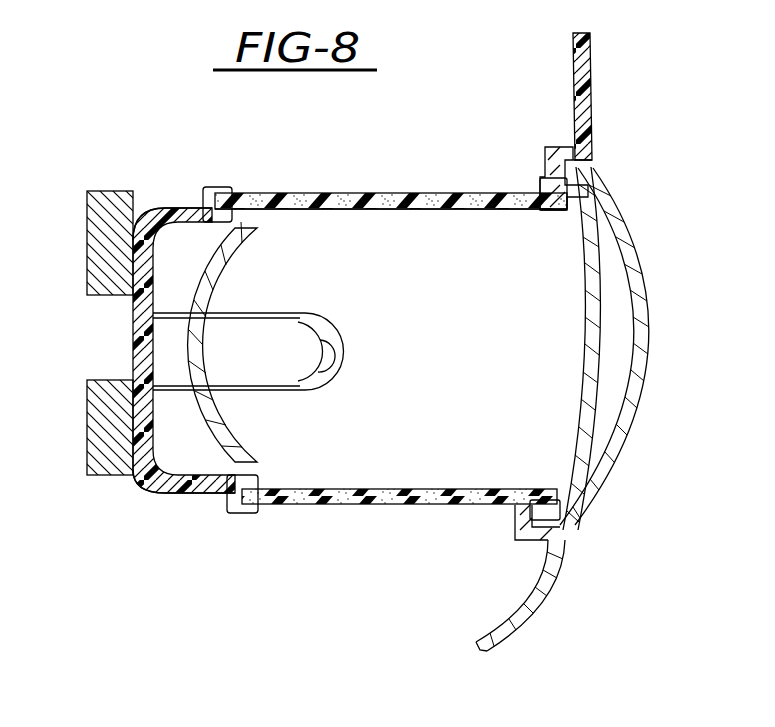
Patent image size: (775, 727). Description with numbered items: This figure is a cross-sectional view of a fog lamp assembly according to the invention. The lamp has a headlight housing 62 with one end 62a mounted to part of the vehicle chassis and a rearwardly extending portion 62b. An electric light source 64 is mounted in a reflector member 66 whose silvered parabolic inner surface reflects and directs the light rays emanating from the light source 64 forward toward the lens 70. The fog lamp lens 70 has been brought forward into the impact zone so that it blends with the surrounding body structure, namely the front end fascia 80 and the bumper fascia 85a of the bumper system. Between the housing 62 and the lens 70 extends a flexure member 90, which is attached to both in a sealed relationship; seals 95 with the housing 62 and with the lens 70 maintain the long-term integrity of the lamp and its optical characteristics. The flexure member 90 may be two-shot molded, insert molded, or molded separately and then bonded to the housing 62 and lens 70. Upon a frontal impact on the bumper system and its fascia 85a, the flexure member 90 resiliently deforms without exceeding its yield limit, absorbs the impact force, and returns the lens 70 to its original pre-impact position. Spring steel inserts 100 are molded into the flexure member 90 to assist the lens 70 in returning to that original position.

The headlight housing 62 is at (114, 156).
The housing end 62a is at (133, 325).
The rearwardly extending portion 62b is at (160, 200).
The electric light source 64 is at (345, 345).
The reflector member 66 is at (233, 432).
The lens 70 is at (634, 410).
The fascia 80 is at (592, 80).
The bumper fascia 85a is at (520, 627).
The flexure member 90 is at (420, 210).
The seal 95 is at (235, 190).
The spring steel inserts 100 is at (348, 193).